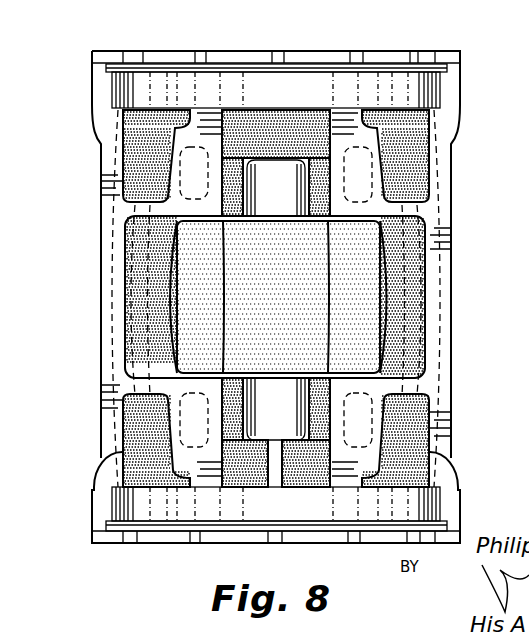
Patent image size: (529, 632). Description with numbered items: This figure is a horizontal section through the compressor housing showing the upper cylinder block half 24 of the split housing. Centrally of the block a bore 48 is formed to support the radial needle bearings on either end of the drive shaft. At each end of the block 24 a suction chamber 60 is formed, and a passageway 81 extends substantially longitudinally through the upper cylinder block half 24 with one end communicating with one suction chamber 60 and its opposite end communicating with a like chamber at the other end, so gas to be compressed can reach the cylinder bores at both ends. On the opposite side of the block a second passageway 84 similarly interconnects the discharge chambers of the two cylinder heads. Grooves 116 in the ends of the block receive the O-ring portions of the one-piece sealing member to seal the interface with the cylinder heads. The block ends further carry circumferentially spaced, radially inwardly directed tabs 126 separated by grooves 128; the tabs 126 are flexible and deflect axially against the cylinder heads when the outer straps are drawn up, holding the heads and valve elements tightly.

The upper cylinder block half 24 is at (445, 185).
The bore 48 is at (248, 175).
The suction chamber 60 is at (415, 118).
The passageway 81 is at (415, 290).
The passageway 84 is at (113, 290).
The groove 116 is at (425, 72).
The tab 126 is at (330, 52).
The groove 128 is at (280, 57).